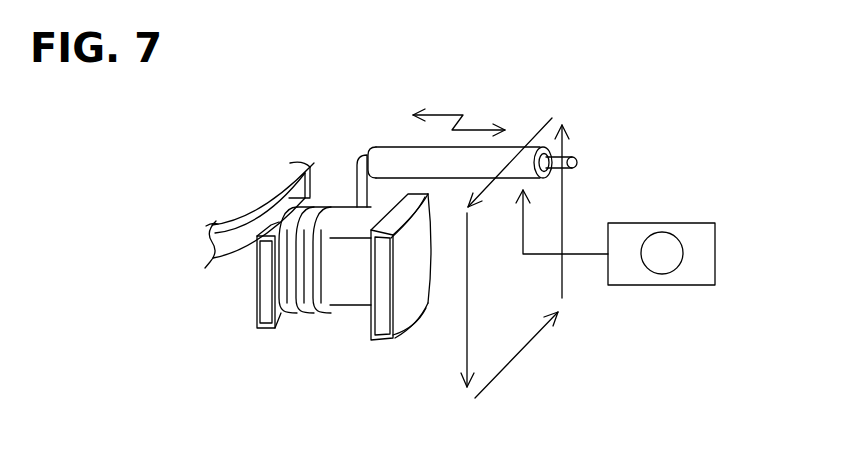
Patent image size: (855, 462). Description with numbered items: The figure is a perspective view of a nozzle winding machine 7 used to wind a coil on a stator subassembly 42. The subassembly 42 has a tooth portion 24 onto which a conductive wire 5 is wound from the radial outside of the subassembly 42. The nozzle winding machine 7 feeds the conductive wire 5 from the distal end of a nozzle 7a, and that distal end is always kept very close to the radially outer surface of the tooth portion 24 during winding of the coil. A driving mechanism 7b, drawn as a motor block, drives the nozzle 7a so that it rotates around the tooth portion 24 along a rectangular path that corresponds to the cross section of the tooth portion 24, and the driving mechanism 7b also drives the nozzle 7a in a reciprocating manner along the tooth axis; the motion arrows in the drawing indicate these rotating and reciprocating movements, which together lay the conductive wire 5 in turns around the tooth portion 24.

The conductive wire 5 is at (357, 183).
The nozzle winding machine 7 is at (605, 102).
The nozzle 7a is at (393, 146).
The driving mechanism 7b is at (650, 223).
The tooth portion 24 is at (332, 337).
The subassembly 42 is at (217, 327).